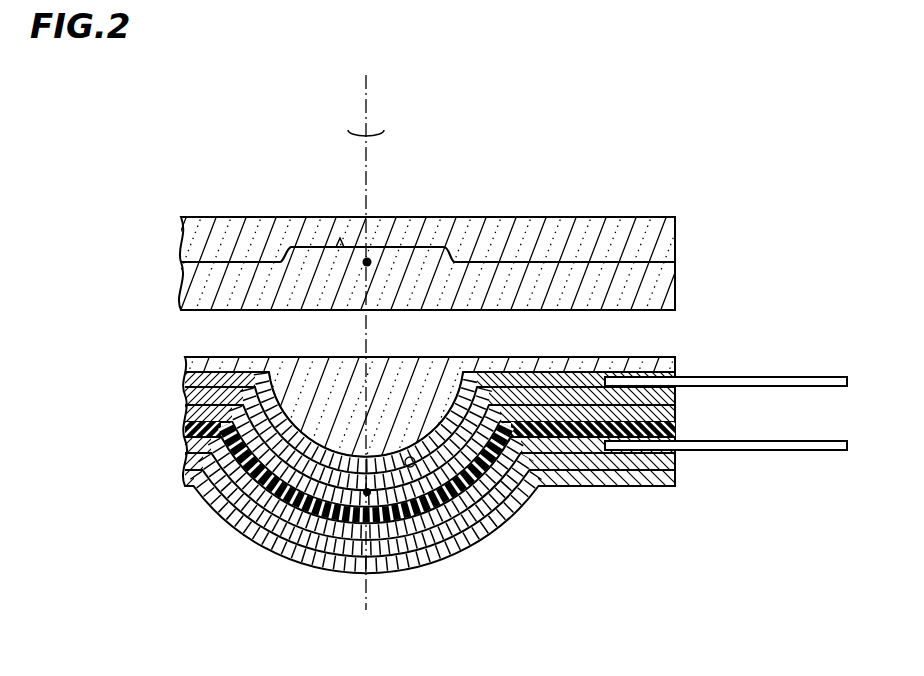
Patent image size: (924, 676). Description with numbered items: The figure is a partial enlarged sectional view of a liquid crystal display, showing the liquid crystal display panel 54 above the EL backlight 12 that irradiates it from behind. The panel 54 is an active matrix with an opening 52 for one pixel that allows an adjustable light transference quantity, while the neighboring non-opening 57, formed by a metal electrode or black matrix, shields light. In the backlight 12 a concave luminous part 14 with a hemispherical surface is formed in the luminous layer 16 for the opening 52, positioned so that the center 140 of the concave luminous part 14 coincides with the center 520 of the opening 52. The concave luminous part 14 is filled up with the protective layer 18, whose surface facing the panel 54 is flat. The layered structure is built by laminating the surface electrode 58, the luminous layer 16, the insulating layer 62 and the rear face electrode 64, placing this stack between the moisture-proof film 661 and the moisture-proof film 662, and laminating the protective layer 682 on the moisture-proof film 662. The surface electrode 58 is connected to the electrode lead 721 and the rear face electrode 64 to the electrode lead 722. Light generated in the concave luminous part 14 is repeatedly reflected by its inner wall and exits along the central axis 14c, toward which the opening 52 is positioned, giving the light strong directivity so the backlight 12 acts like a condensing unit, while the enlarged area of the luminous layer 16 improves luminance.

The EL backlight 12 is at (428, 483).
The concave luminous part 14 is at (463, 530).
The central axis 14c is at (386, 130).
The center 140 is at (403, 527).
The luminous layer 16 is at (183, 413).
The protective layer 18 is at (183, 357).
The opening 52 is at (317, 245).
The center 520 is at (367, 262).
The liquid crystal display panel 54 is at (552, 217).
The non-opening 57 is at (255, 262).
The surface electrode 58 is at (185, 397).
The insulating layer 62 is at (183, 432).
The rear face electrode 64 is at (183, 447).
The moisture-proof film 661 is at (183, 375).
The moisture-proof film 662 is at (183, 405).
The protective layer 682 is at (185, 477).
The electrode lead 721 is at (768, 377).
The electrode lead 722 is at (770, 450).